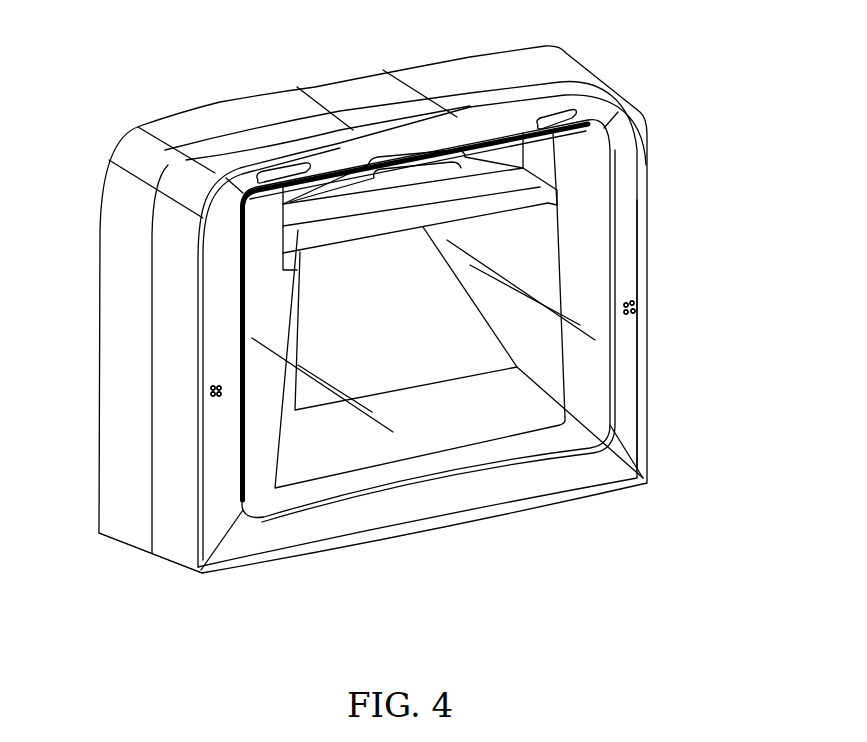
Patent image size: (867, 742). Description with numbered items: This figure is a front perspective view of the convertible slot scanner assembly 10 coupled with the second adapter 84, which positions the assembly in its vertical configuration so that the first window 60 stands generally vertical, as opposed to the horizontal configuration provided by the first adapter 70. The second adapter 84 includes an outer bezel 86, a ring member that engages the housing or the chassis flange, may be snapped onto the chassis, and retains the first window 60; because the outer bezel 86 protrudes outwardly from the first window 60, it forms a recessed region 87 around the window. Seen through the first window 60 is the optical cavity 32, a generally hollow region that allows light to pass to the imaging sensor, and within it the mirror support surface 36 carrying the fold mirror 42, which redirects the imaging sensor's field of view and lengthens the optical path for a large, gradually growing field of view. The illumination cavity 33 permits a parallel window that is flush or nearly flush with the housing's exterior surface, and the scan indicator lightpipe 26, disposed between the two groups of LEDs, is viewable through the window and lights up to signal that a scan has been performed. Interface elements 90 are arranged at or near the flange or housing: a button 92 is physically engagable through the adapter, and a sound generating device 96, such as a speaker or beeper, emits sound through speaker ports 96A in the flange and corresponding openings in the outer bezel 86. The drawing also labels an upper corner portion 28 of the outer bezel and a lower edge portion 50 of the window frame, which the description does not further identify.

The convertible slot scanner assembly 10 is at (118, 553).
The scan indicator lightpipe 26 is at (413, 160).
The top rim of housing 28 is at (598, 155).
The optical cavity 32 is at (447, 312).
The illumination cavity 33 is at (543, 173).
The mirror support surface 36 is at (453, 432).
The fold mirror 42 is at (405, 358).
The lower bezel edge 50 is at (540, 443).
The first window 60 is at (585, 400).
The first adapter 70 is at (100, 233).
The second adapter 84 is at (628, 352).
The outer bezel 86 is at (223, 327).
The recessed region 87 is at (240, 545).
The interface element 90 is at (550, 116).
The button 92 is at (275, 175).
The sound generating device 96 is at (210, 382).
The speaker port 96A is at (205, 392).